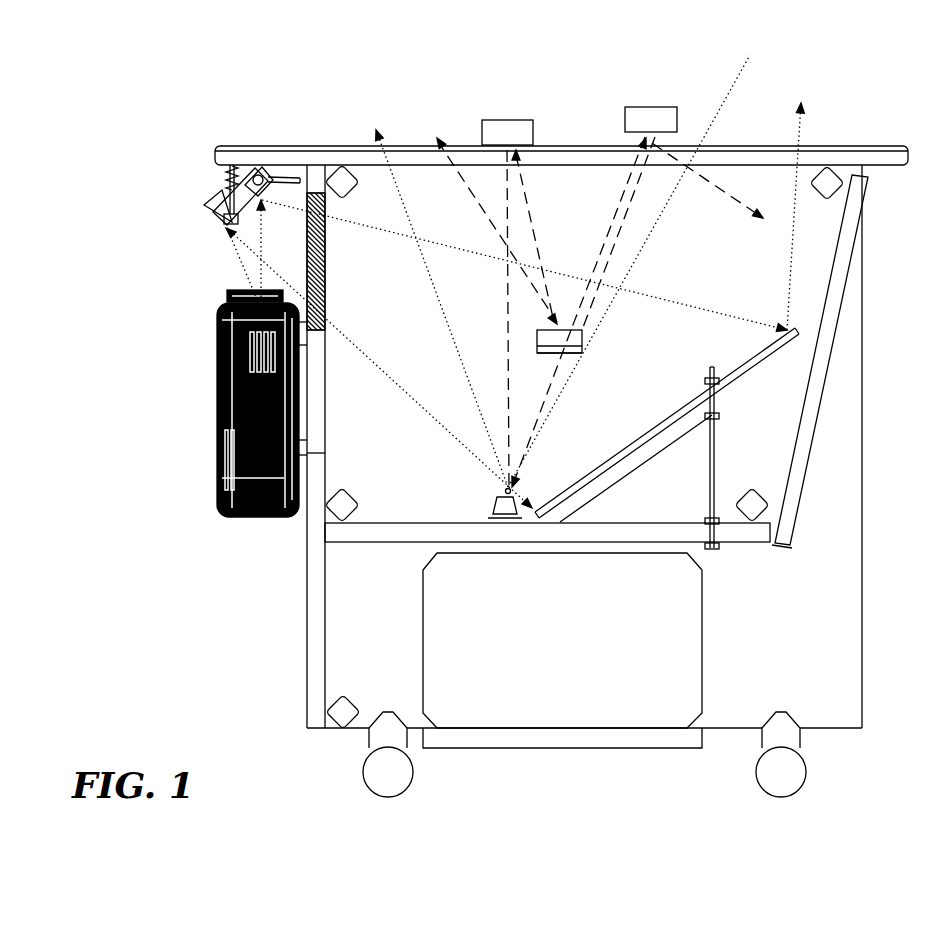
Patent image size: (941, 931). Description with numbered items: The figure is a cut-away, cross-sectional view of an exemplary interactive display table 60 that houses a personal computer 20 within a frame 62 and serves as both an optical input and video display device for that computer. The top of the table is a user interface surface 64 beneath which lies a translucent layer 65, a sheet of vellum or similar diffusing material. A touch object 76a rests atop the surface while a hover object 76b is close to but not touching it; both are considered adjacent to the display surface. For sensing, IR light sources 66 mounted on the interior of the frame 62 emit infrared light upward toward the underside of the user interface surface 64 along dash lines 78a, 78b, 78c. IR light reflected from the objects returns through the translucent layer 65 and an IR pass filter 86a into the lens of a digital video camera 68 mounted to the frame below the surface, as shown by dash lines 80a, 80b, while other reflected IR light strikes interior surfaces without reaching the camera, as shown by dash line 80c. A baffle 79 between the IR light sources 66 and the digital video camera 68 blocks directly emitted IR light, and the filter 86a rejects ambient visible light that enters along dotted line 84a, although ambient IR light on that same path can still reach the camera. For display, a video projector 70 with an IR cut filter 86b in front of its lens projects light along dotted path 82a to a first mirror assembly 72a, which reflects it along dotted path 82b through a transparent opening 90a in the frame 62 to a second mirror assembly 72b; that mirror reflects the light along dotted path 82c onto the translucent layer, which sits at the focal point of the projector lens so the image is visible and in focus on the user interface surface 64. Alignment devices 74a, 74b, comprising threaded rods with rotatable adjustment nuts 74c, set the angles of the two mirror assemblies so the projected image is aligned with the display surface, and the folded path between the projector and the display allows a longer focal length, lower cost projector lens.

The personal computer 20 is at (704, 642).
The interactive display table 60 is at (506, 481).
The frame 62 is at (307, 638).
The user interface surface 64 is at (340, 150).
The translucent layer 65 is at (722, 150).
The IR light sources 66 is at (537, 338).
The digital video camera 68 is at (494, 504).
The video projector 70 is at (215, 377).
The first mirror assembly 72a is at (222, 228).
The second mirror assembly 72b is at (637, 436).
The alignment device 74a is at (287, 180).
The alignment device 74b is at (716, 438).
The rotatable adjustment nuts 74c is at (226, 218).
The touch object 76a is at (493, 120).
The hover object 76b is at (642, 107).
The dash line 78a is at (477, 197).
The dash line 78b is at (534, 235).
The dash line 78c is at (623, 183).
The baffle 79 is at (550, 354).
The dash line 80a is at (507, 305).
The dash line 80b is at (587, 305).
The dash line 80c is at (723, 190).
The dotted path 82a is at (258, 243).
The dotted path 82b is at (697, 308).
The dotted path 82c is at (427, 265).
The dotted line 84a is at (745, 62).
The IR pass filter 86a is at (503, 490).
The IR cut filter 86b is at (227, 295).
The transparent opening 90a is at (327, 297).